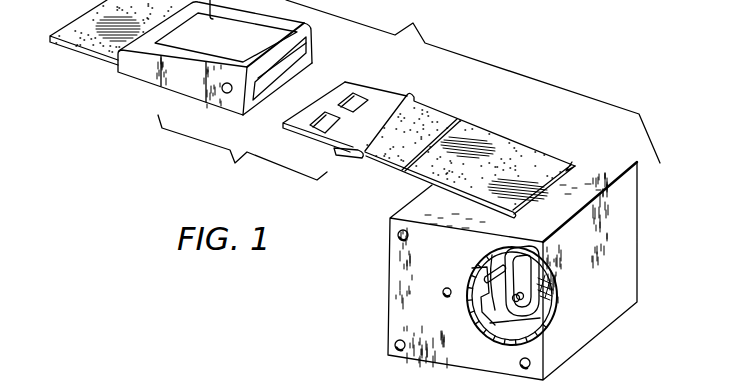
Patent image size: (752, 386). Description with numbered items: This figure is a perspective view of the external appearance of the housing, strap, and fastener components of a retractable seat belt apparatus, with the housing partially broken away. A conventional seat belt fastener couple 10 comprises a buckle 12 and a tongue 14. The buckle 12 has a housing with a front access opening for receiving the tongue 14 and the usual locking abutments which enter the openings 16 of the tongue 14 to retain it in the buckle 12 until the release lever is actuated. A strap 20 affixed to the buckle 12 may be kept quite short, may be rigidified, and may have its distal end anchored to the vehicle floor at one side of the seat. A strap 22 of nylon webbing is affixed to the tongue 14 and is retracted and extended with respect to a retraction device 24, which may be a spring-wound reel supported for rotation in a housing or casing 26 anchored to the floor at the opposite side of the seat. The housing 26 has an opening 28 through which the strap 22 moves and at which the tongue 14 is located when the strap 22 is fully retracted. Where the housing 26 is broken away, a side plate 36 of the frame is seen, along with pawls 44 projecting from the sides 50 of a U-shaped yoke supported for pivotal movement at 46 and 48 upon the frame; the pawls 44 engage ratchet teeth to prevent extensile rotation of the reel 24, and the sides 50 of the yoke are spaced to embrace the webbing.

The seat belt fastener couple 10 is at (242, 150).
The buckle 12 is at (181, 77).
The tongue 14 is at (283, 130).
The openings 16 is at (327, 125).
The strap 20 is at (93, 43).
The strap 22 is at (436, 122).
The retraction device 24 is at (513, 320).
The housing 26 is at (622, 285).
The opening 28 is at (577, 165).
The side plate 36 is at (274, 379).
The pawls 44 is at (537, 307).
The pivot 46 is at (485, 275).
The pivot 48 is at (442, 379).
The sides of the yoke 50 is at (515, 281).